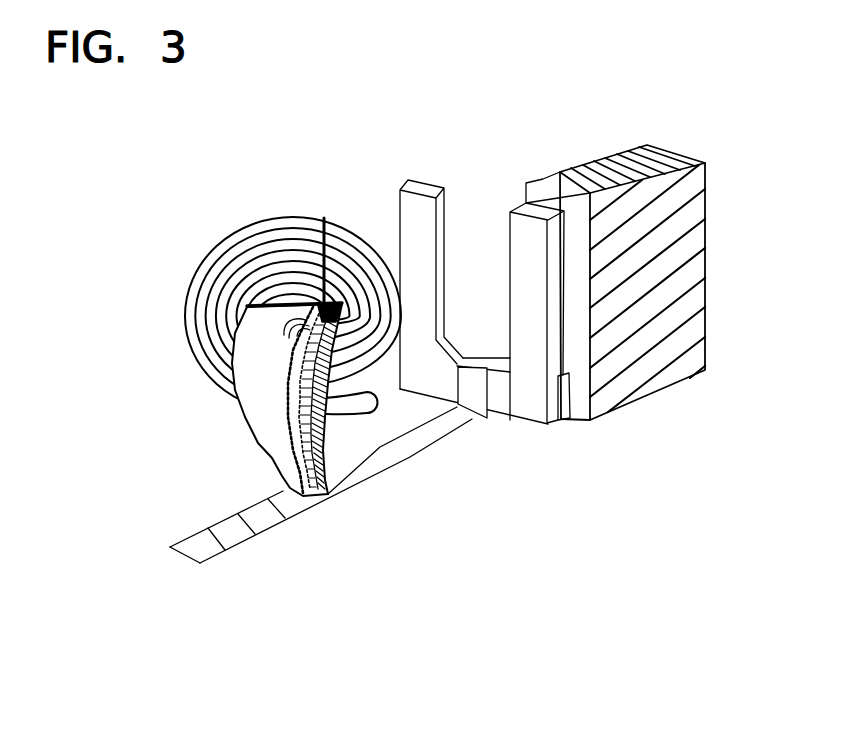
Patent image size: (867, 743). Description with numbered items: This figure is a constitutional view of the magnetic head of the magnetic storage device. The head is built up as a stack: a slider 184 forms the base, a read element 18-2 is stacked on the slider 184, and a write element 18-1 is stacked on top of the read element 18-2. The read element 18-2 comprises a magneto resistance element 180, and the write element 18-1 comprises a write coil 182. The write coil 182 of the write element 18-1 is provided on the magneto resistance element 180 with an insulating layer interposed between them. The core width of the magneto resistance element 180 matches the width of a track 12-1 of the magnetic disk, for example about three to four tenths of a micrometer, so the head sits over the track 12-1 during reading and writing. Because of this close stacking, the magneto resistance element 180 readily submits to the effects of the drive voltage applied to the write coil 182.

The write coil 182 is at (288, 218).
The write element 18-1 is at (226, 396).
The read element 18-2 is at (538, 208).
The magneto resistance element 180 is at (524, 309).
The slider 184 is at (667, 377).
The track 12-1 is at (213, 543).